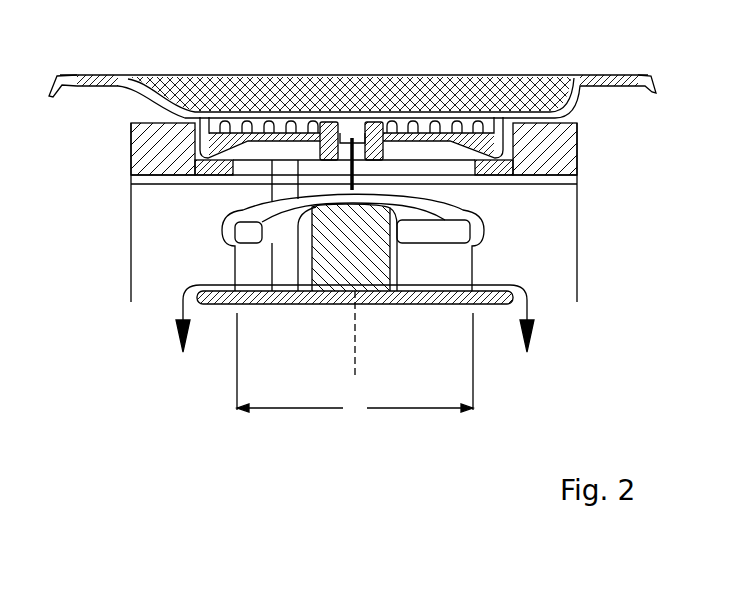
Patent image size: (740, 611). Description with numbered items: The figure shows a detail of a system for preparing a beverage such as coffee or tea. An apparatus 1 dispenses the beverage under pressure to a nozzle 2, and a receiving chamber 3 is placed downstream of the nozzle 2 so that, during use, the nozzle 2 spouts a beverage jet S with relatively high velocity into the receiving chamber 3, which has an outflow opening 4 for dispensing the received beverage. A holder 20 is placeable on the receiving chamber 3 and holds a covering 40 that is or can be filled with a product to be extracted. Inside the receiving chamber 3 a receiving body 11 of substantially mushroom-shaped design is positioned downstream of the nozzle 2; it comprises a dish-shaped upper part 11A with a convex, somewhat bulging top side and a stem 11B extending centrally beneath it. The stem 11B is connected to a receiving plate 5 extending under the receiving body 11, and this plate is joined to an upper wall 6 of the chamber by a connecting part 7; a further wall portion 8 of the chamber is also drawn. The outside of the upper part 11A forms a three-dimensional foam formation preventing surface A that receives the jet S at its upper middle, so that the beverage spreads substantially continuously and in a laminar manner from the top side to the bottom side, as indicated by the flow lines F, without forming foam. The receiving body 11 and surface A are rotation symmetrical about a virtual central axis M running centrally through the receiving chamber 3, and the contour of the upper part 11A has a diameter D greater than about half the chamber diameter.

The apparatus 1 is at (305, 56).
The nozzle 2 is at (358, 137).
The receiving chamber 3 is at (529, 242).
The outflow opening 4 is at (160, 301).
The receiving plate 5 is at (212, 306).
The upper wall 6 is at (160, 161).
The connecting part 7 is at (287, 269).
The housing side wall 8 is at (577, 230).
The receiving body 11 is at (347, 253).
The dish-shaped upper part 11A is at (368, 217).
The stem 11B is at (328, 272).
The holder 20 is at (570, 105).
The covering 40 is at (539, 78).
The foam formation preventing surface A is at (251, 213).
The beverage jet S is at (577, 184).
The beverage flow lines F is at (355, 353).
The virtual central axis M is at (355, 368).
The diameter D is at (355, 367).